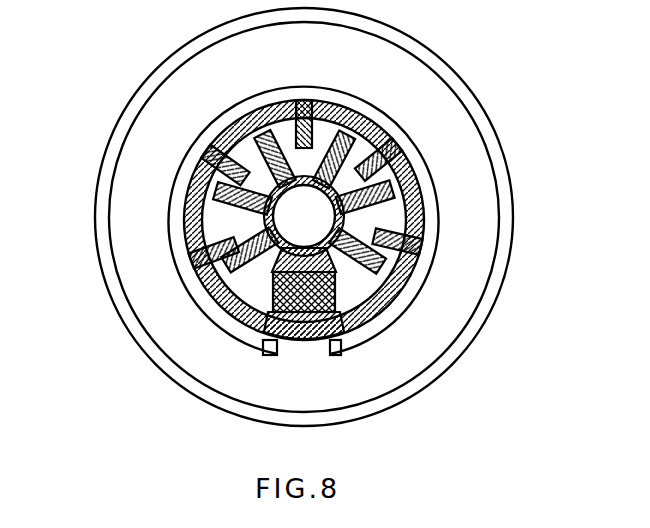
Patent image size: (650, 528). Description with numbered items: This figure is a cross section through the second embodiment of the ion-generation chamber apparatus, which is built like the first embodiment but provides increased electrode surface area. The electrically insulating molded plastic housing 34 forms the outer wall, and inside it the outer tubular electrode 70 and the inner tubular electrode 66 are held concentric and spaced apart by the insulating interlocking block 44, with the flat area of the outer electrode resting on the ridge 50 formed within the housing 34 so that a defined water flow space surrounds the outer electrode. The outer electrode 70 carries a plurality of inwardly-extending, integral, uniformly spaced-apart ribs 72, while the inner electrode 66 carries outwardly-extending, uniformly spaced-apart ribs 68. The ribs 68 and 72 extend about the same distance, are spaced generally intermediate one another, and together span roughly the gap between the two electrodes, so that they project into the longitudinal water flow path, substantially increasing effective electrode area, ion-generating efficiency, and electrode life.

The housing 34 is at (433, 114).
The insulating block 44 is at (264, 344).
The ridge 50 is at (308, 348).
The inner tubular electrode 66 is at (275, 272).
The inner ribs 68 is at (247, 133).
The outer tubular electrode 70 is at (425, 193).
The outer ribs 72 is at (383, 143).